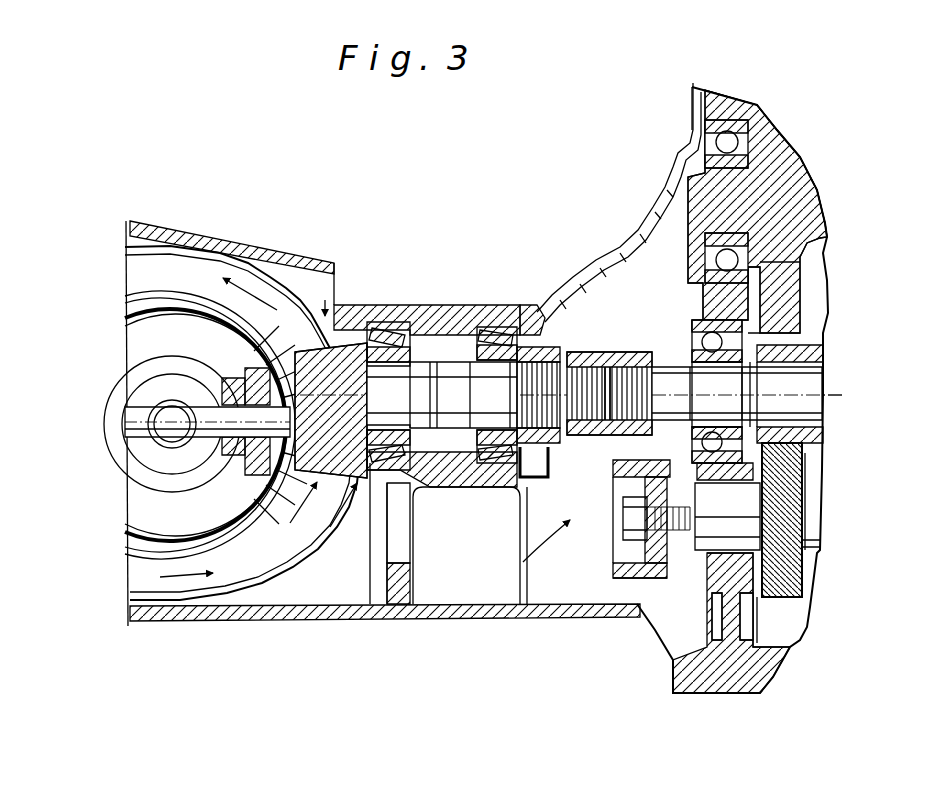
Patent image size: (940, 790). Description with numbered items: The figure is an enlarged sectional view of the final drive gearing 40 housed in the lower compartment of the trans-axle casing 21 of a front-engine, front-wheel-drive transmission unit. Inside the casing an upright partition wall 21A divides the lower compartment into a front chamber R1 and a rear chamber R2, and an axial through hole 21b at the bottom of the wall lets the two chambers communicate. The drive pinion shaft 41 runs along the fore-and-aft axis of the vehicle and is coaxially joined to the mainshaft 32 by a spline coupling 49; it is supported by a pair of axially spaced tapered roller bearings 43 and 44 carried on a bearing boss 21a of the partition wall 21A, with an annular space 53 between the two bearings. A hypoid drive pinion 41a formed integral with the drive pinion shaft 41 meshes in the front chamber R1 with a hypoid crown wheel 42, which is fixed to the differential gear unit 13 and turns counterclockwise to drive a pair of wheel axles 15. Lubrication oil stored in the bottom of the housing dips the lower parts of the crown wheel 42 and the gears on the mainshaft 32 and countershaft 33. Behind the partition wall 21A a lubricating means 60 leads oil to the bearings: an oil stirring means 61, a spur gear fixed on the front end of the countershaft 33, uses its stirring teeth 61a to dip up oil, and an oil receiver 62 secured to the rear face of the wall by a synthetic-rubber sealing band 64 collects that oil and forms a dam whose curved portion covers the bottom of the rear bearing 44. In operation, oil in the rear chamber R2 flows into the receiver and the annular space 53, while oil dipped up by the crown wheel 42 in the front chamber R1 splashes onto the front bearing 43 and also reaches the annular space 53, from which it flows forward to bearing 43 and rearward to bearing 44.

The differential gear unit 13 is at (165, 358).
The wheel axles 15 is at (157, 447).
The trans-axle casing 21 is at (190, 620).
The upright partition wall 21A is at (413, 583).
The bearing boss 21a is at (443, 483).
The axial through hole 21b is at (403, 558).
The mainshaft 32 is at (815, 378).
The countershaft 33 is at (815, 502).
The final drive gearing 40 is at (327, 300).
The drive pinion shaft 41 is at (528, 356).
The hypoid drive pinion 41a is at (355, 310).
The hypoid crown wheel 42 is at (268, 283).
The front tapered roller bearing 43 is at (418, 310).
The rear tapered roller bearing 44 is at (500, 305).
The spline coupling 49 is at (600, 352).
The annular space 53 is at (443, 478).
The lubricating means 60 is at (520, 565).
The oil stirring means 61 is at (613, 555).
The stirring teeth 61a is at (650, 578).
The oil receiver 62 is at (545, 470).
The sealing band of synthetic rubber 64 is at (524, 490).
The front chamber R1 is at (288, 604).
The rear chamber R2 is at (567, 604).